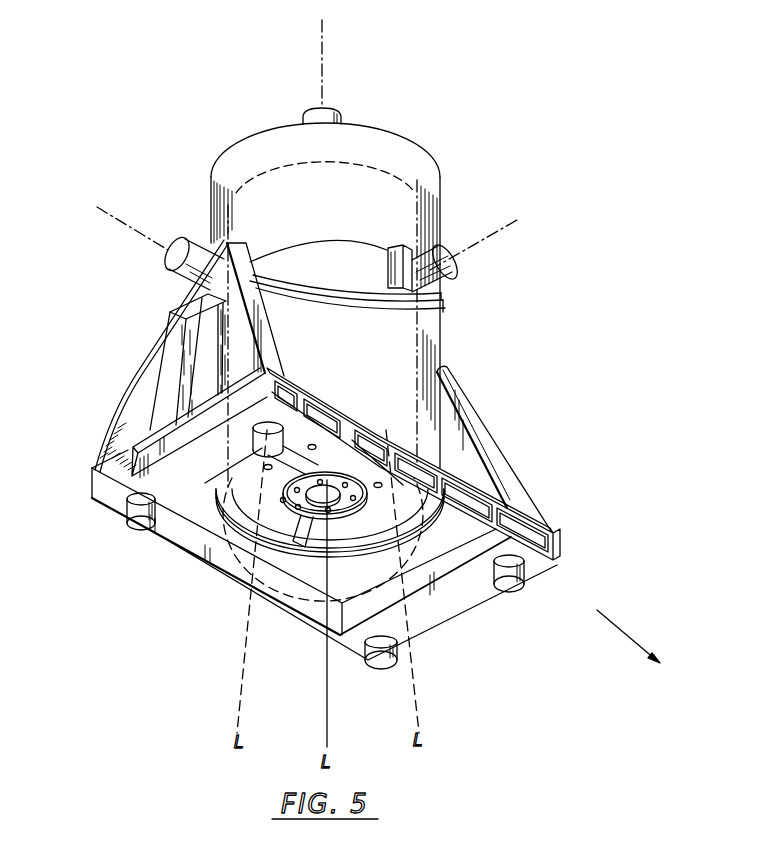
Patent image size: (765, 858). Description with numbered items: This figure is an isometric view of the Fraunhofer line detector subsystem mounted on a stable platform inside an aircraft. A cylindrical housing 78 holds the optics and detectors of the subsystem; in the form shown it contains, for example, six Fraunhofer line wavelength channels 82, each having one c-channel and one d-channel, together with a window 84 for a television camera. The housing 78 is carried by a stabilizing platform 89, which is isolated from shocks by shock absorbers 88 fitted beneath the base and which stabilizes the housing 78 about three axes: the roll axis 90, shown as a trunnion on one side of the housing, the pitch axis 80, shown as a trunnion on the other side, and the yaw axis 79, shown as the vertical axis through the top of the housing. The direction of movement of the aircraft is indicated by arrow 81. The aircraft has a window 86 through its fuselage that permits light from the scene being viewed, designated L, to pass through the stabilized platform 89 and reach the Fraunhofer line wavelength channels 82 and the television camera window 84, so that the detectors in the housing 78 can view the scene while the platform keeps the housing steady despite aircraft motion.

The housing 78 is at (290, 143).
The yaw axis 79 is at (322, 92).
The pitch axis 80 is at (510, 220).
The arrow 81 is at (620, 630).
The Fraunhofer line wavelength channels 82 is at (340, 462).
The window 84 is at (385, 485).
The window 86 is at (383, 570).
The shock absorbers 88 is at (140, 521).
The stabilizing platform 89 is at (110, 450).
The roll axis 90 is at (133, 207).